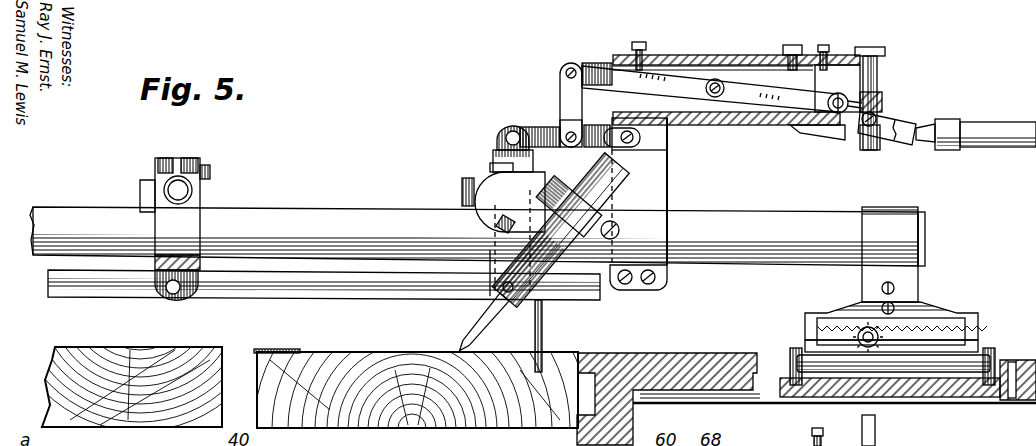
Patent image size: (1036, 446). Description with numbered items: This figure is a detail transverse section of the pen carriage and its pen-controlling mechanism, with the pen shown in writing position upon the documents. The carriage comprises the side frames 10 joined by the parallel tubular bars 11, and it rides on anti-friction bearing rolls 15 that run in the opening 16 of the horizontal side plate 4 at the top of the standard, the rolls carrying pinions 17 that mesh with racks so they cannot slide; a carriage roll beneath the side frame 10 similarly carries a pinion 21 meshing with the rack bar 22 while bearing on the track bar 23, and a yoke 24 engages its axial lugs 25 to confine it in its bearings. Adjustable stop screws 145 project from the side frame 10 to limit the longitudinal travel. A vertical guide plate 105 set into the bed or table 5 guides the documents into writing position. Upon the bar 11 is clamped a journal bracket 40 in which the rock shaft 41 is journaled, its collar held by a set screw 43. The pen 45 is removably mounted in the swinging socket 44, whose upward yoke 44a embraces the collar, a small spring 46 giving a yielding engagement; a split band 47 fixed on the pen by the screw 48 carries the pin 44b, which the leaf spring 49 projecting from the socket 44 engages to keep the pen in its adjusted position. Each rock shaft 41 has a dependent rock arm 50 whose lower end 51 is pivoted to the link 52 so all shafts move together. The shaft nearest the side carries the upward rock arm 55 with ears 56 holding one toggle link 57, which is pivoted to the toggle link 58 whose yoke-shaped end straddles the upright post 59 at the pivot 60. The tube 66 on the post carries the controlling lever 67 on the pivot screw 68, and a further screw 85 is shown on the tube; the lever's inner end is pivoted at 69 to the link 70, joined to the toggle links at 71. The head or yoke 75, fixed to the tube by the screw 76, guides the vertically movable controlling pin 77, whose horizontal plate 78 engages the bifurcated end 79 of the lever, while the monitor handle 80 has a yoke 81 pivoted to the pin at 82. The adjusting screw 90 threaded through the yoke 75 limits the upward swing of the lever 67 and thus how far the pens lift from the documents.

The horizontal side plate 4 is at (680, 358).
The main bed or table 5 is at (160, 356).
The side frame 10 is at (914, 283).
The tubular bar 11 is at (343, 222).
The bearing roll 15 is at (918, 372).
The opening 16 is at (940, 385).
The pinion 17 is at (795, 350).
The pinion 21 is at (880, 338).
The rack bar 22 is at (836, 320).
The track bar 23 is at (955, 310).
The yoke 24 is at (970, 344).
The axial lug 25 is at (864, 330).
The journal bracket 40 is at (165, 212).
The rock shaft 41 is at (202, 186).
The set screw 43 is at (462, 188).
The swinging socket 44 is at (562, 262).
The yoke 44a is at (493, 218).
The pin 44b is at (508, 134).
The pen or writing member 45 is at (655, 186).
The spring 46 is at (500, 228).
The split band 47 is at (577, 190).
The screw 48 is at (619, 229).
The leaf spring 49 is at (495, 264).
The rock arm 50 is at (163, 283).
The lower end of rock arm 51 is at (172, 291).
The link 52 is at (333, 286).
The rock arm 55 is at (493, 158).
The ears or lugs 56 is at (507, 135).
The toggle link 57 is at (537, 128).
The toggle link 58 is at (594, 125).
The upright post 59 is at (655, 154).
The pivot 60 is at (634, 137).
The tube 66 is at (740, 60).
The controlling lever 67 is at (668, 84).
The pivot screw 68 is at (715, 79).
The pivot 69 is at (570, 67).
The link 70 is at (563, 94).
The pivot 71 is at (561, 126).
The head or yoke 75 is at (812, 130).
The screw 76 is at (794, 45).
The controlling pin 77 is at (880, 82).
The horizontal plate 78 is at (882, 101).
The bifurcated end 79 is at (838, 96).
The monitor handle 80 is at (1000, 126).
The yoke 81 is at (900, 138).
The pivot 82 is at (864, 145).
The screw 85 is at (638, 42).
The adjusting screw 90 is at (826, 45).
The vertical guide plate 105 is at (542, 340).
The adjustable stop screw 145 is at (896, 289).